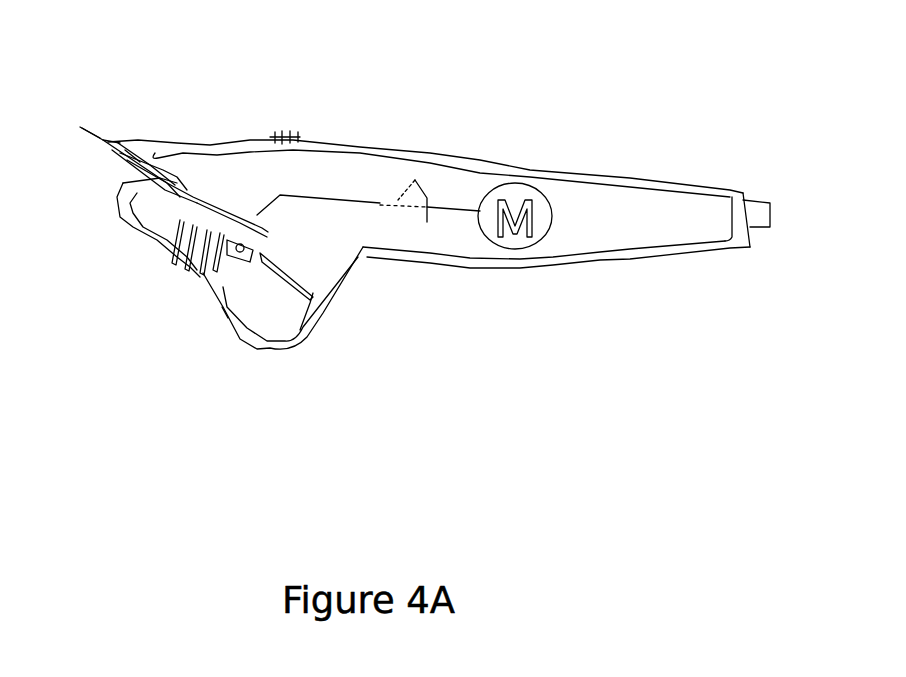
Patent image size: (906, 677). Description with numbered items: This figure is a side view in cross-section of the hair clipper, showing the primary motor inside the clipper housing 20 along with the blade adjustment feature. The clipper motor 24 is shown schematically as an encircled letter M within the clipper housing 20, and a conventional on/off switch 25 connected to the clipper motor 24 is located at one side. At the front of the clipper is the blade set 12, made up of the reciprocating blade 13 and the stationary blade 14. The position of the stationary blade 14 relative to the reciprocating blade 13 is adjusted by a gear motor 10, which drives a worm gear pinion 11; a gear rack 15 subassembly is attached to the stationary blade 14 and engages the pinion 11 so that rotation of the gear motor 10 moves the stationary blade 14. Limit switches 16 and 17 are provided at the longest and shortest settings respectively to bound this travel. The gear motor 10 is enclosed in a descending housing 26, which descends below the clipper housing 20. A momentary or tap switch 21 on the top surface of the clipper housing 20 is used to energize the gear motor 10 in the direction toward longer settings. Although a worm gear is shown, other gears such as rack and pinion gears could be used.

The gear motor 10 is at (240, 337).
The worm gear pinion 11 is at (200, 270).
The blade set 12 is at (100, 127).
The reciprocating blade 13 is at (123, 143).
The stationary blade 14 is at (129, 141).
The gear rack 15 is at (250, 197).
The limit switch 16 is at (138, 228).
The limit switch 17 is at (200, 276).
The clipper housing 20 is at (510, 165).
The momentary switch 21 is at (288, 138).
The clipper motor 24 is at (537, 249).
The on/off switch 25 is at (427, 198).
The descending housing 26 is at (219, 323).